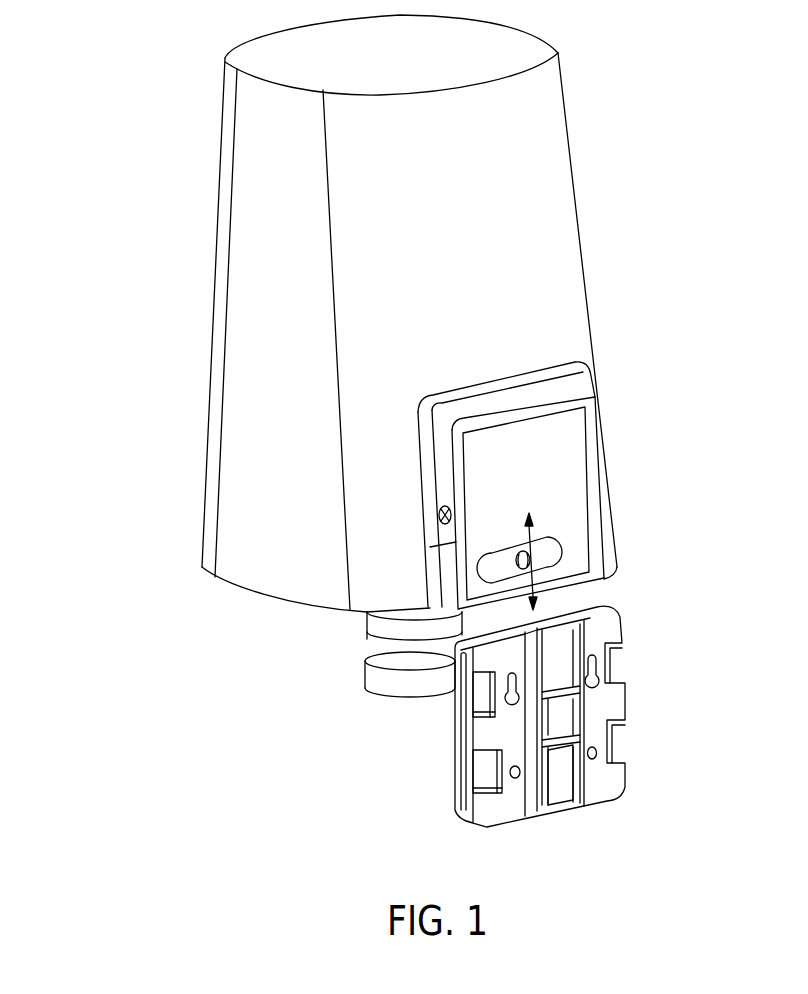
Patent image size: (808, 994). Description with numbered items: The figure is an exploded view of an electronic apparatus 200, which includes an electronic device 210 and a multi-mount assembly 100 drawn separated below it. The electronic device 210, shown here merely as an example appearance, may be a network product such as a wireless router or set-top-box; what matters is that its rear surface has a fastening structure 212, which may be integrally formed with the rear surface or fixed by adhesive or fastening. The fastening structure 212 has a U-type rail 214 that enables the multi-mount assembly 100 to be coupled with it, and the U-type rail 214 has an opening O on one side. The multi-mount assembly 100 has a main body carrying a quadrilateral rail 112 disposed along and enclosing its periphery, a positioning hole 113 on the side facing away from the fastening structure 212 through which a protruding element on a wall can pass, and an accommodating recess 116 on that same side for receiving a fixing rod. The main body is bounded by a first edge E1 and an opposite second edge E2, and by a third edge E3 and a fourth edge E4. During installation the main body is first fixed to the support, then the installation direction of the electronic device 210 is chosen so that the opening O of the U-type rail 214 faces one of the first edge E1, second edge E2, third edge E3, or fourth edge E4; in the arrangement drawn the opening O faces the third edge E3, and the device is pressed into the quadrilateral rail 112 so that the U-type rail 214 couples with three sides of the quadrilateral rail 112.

The electronic apparatus 200 is at (206, 106).
The electronic device 210 is at (573, 260).
The fastening structure 212 is at (420, 447).
The U-type rail 214 is at (462, 478).
The opening O is at (593, 502).
The multi-mount assembly 100 is at (618, 632).
The quadrilateral rail 112 is at (441, 750).
The positioning hole 113 is at (612, 681).
The accommodating recess 116 is at (575, 780).
The first edge E1 is at (444, 781).
The second edge E2 is at (645, 740).
The third edge E3 is at (472, 625).
The fourth edge E4 is at (517, 850).